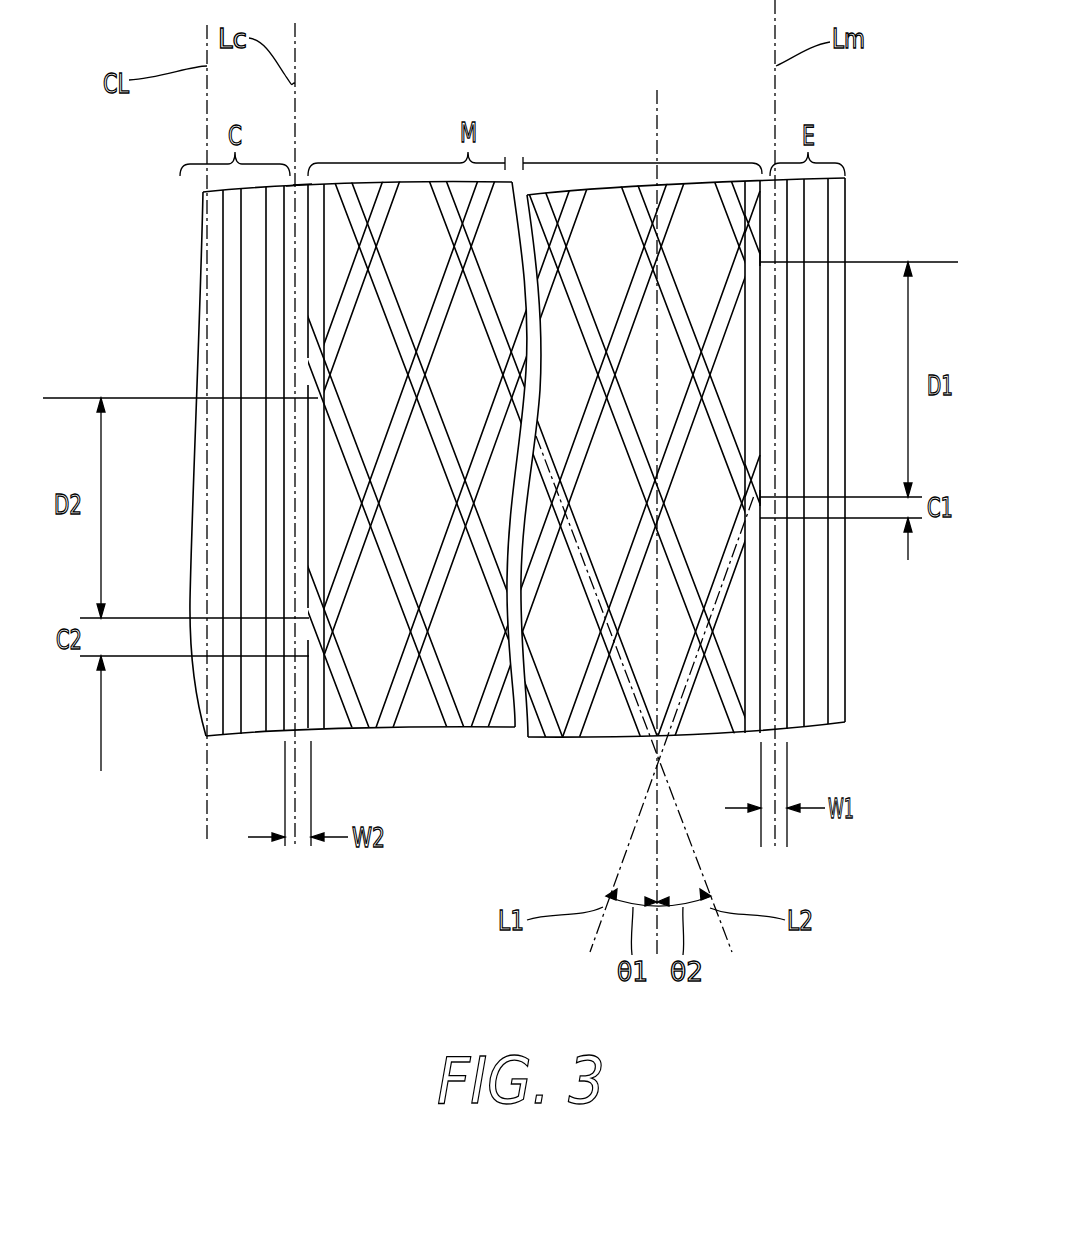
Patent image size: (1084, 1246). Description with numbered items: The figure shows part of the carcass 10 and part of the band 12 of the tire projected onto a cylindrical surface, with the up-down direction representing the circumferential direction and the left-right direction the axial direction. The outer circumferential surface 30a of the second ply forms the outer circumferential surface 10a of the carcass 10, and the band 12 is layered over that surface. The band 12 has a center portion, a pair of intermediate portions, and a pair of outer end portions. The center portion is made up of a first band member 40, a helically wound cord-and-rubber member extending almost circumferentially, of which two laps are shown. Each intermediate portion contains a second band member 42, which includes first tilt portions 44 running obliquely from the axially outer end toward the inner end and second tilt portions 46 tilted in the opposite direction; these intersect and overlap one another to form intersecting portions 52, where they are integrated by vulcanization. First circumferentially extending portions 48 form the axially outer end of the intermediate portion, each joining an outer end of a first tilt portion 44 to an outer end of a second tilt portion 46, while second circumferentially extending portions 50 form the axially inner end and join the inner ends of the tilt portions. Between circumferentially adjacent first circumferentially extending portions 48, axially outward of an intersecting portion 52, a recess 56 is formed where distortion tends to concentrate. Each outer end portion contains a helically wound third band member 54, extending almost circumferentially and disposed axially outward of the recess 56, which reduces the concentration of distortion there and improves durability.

The carcass 10 is at (465, 662).
The outer circumferential surface of the carcass 10a is at (321, 112).
The band 12 is at (546, 430).
The outer circumferential surface of the second ply 30a is at (300, 185).
The first band member 40 is at (272, 300).
The second band member 42 is at (546, 432).
The first tilt portion 44 is at (376, 215).
The second tilt portion 46 is at (645, 220).
The first circumferentially extending portion 48 is at (753, 383).
The second circumferentially extending portion 50 is at (316, 490).
The intersecting portion 52 is at (747, 257).
The third band member 54 is at (797, 613).
The recess 56 is at (762, 258).